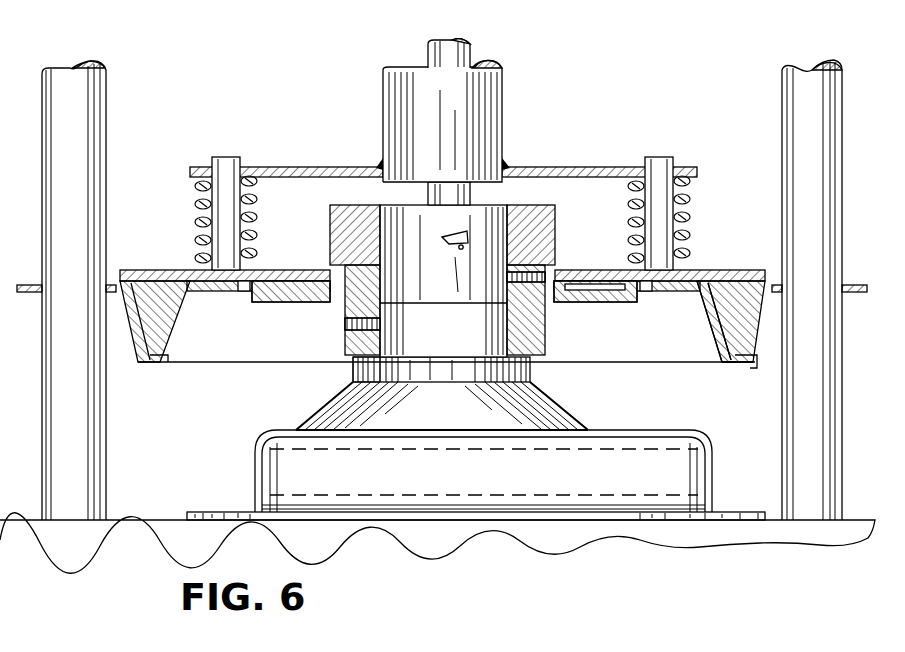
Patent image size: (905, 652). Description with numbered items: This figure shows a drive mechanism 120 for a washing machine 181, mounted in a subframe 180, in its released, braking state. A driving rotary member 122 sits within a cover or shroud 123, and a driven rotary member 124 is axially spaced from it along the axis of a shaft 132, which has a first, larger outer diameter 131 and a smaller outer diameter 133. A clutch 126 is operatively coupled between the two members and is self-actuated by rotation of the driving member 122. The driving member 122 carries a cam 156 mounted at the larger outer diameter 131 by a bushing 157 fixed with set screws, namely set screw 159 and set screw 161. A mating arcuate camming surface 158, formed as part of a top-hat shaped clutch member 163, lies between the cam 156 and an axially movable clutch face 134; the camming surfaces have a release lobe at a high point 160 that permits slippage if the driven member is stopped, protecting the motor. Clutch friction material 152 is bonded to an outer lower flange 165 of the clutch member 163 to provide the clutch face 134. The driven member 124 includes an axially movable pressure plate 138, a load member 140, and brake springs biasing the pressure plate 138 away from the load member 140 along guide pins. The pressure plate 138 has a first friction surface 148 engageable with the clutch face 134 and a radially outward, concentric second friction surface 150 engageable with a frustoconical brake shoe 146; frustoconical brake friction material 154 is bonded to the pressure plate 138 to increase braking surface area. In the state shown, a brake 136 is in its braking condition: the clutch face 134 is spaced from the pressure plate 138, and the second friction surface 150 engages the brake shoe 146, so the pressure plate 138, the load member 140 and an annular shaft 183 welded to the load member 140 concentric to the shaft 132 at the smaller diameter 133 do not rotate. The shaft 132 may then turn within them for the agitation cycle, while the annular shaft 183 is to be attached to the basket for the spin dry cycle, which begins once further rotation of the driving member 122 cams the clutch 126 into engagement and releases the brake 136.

The drive mechanism 120 is at (233, 412).
The driving rotary member 122 is at (268, 433).
The cover or shroud 123 is at (253, 488).
The driven rotary member 124 is at (232, 189).
The clutch 126 is at (325, 310).
The first outer diameter 131 is at (538, 365).
The shaft 132 is at (432, 55).
The smaller outer diameter 133 is at (472, 62).
The clutch face 134 is at (627, 290).
The brake 136 is at (770, 282).
The pressure plate 138 is at (700, 268).
The load member 140 is at (592, 165).
The brake shoe 146 is at (715, 357).
The first friction surface 148 is at (590, 287).
The second friction surface 150 is at (702, 325).
The clutch friction material 152 is at (583, 290).
The brake friction material 154 is at (752, 370).
The cam 156 is at (415, 310).
The bushing 157 is at (372, 360).
The camming surface 158 is at (463, 232).
The set screw 159 is at (358, 335).
The high point 160 is at (455, 250).
The set screw 161 is at (556, 272).
The clutch member 163 is at (543, 208).
The outer lower flange 165 is at (255, 303).
The subframe 180 is at (80, 212).
The washing machine 181 is at (58, 530).
The annular shaft 183 is at (502, 135).